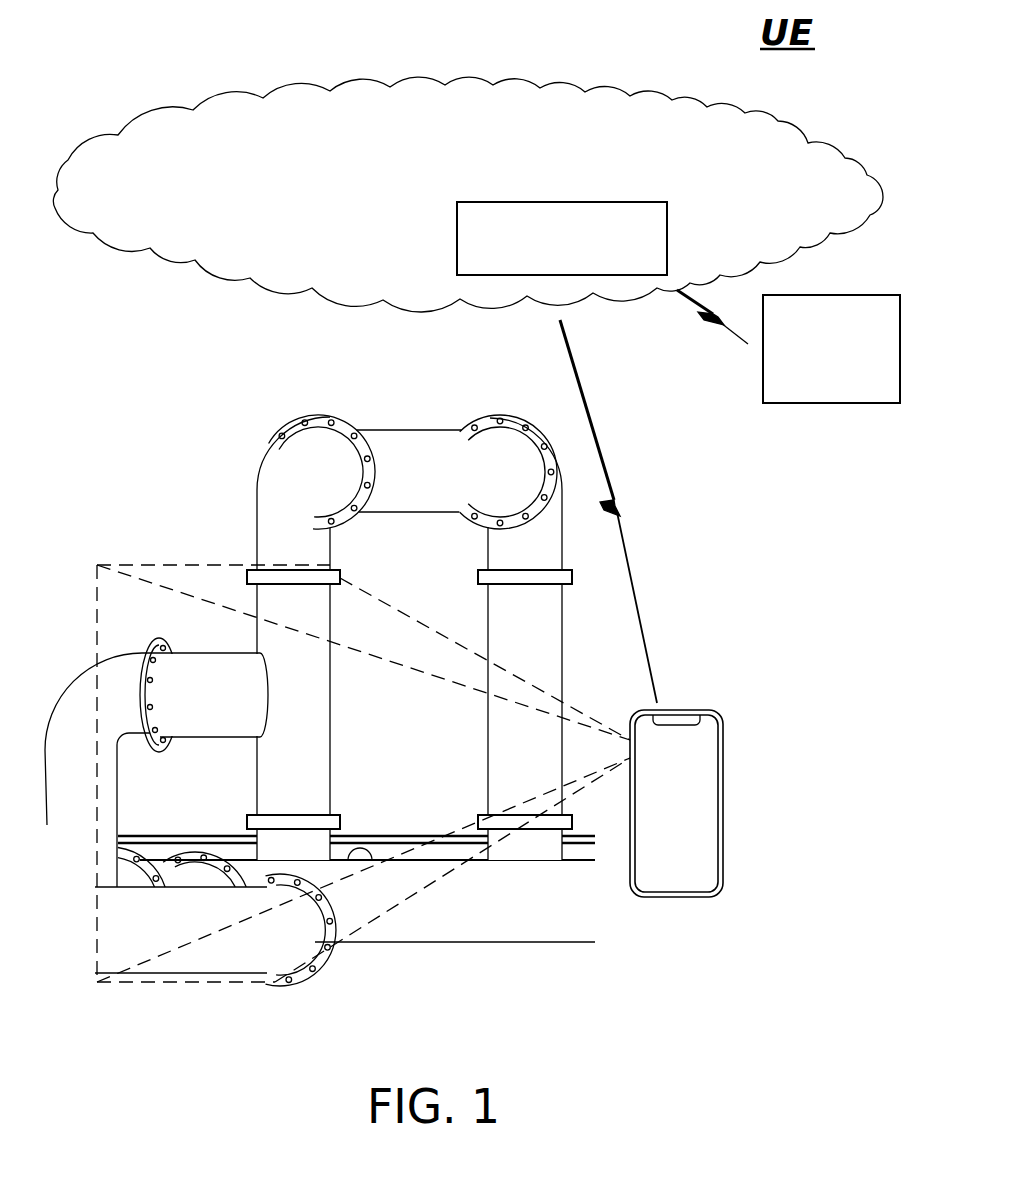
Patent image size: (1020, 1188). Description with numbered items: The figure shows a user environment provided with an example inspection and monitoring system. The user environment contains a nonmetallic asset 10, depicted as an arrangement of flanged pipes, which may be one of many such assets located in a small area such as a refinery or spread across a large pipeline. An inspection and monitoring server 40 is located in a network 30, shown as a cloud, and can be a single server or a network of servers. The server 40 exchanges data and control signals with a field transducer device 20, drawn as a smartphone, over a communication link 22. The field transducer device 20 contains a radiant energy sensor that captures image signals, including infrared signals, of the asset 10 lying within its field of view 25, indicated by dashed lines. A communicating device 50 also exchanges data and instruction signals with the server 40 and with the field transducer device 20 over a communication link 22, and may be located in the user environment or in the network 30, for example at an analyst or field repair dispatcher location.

The nonmetallic asset 10 is at (302, 452).
The field transducer (FT) device 20 is at (697, 712).
The communication link 22 is at (705, 315).
The field of view 25 is at (399, 762).
The network 30 is at (468, 194).
The inspection and monitoring (IAM) server 40 is at (562, 238).
The communicating device 50 is at (831, 349).